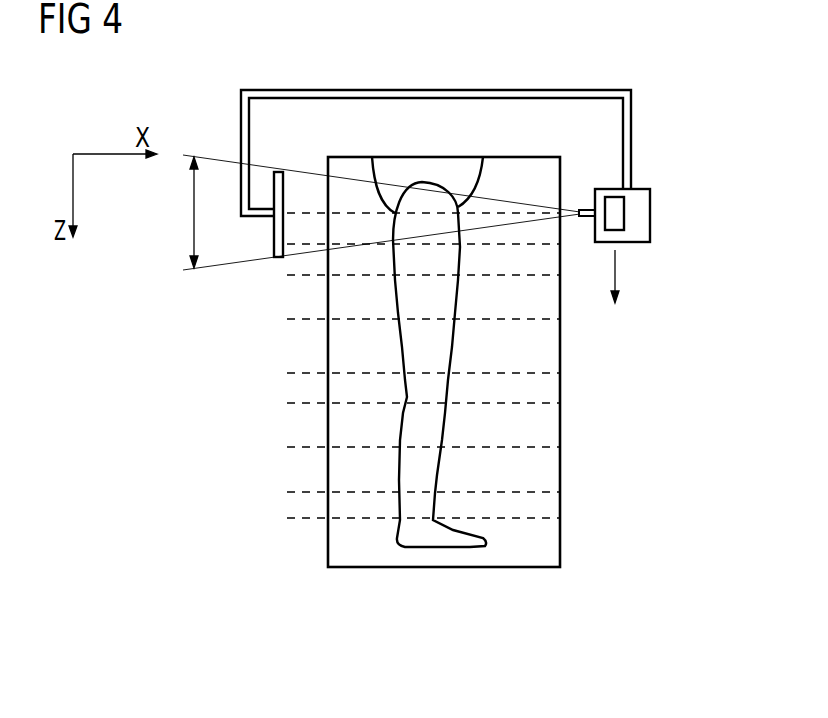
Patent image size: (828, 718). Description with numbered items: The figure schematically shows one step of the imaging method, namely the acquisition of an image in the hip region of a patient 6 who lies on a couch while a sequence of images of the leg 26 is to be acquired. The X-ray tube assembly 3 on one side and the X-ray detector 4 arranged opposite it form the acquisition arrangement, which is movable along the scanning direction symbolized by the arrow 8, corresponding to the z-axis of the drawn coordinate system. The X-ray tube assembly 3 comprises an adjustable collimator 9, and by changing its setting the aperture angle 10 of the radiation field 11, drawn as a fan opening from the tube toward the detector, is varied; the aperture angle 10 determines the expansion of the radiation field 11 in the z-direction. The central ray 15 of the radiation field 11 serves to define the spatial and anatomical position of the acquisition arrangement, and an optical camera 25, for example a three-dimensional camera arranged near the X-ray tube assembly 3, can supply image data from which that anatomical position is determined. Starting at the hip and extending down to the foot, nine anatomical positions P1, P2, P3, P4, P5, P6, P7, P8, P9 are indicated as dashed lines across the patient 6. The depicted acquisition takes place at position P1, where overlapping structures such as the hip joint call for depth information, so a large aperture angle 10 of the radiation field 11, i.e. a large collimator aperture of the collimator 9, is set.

The X-ray tube assembly 3 is at (640, 202).
The X-ray detector 4 is at (273, 180).
The patient 6 is at (457, 173).
The arrow 8 is at (617, 265).
The collimator 9 is at (582, 208).
The aperture angle 10 is at (192, 208).
The radiation field 11 is at (292, 185).
The central ray 15 is at (308, 208).
The optical camera 25 is at (615, 217).
The leg 26 is at (422, 535).
The anatomical position P1 is at (300, 215).
The anatomical position P2 is at (302, 245).
The anatomical position P3 is at (298, 278).
The anatomical position P4 is at (302, 321).
The anatomical position P5 is at (303, 375).
The anatomical position P6 is at (302, 405).
The anatomical position P7 is at (297, 449).
The anatomical position P8 is at (300, 494).
The anatomical position P9 is at (297, 520).